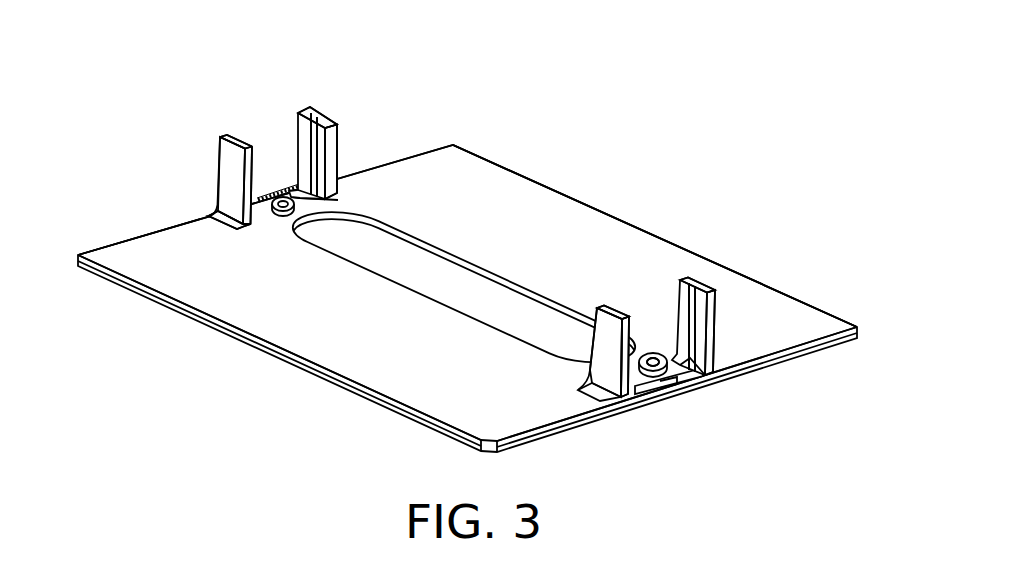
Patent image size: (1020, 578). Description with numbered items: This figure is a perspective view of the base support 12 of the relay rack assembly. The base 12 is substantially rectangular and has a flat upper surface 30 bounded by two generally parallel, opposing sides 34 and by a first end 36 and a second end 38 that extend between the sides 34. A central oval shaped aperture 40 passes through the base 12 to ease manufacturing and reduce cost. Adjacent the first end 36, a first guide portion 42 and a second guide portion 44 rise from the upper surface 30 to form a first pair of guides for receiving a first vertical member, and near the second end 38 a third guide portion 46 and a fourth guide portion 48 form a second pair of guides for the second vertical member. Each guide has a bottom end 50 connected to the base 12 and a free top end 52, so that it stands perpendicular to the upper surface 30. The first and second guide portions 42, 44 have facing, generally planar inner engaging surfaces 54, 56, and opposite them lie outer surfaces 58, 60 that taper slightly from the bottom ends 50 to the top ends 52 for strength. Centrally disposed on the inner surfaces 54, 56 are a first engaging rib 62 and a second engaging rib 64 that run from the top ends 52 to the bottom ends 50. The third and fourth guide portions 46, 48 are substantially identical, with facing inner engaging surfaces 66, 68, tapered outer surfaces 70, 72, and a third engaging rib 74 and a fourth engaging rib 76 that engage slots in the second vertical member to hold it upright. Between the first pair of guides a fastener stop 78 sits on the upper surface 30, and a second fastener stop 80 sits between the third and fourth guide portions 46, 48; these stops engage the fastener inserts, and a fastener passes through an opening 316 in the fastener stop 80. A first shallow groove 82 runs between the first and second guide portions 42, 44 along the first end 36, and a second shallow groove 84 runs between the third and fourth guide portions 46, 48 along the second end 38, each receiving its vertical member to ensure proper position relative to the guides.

The base support 12 is at (620, 151).
The upper surface 30 is at (460, 145).
The sides 34 is at (527, 173).
The first end 36 is at (103, 243).
The second end 38 is at (521, 441).
The central oval shaped aperture 40 is at (453, 257).
The first guide portion 42 is at (212, 147).
The second guide portion 44 is at (343, 128).
The third guide portion 46 is at (628, 307).
The fourth guide portion 48 is at (720, 301).
The bottom end 50 is at (216, 200).
The top end 52 is at (218, 133).
The inner engaging surface 54 is at (225, 136).
The inner engaging surface 56 is at (308, 107).
The outer surface 58 is at (224, 176).
The outer surface 60 is at (345, 156).
The first engaging rib 62 is at (249, 140).
The second engaging rib 64 is at (298, 112).
The inner engaging surface 66 is at (632, 310).
The inner engaging surface 68 is at (681, 292).
The outer surface 70 is at (607, 345).
The outer surface 72 is at (723, 328).
The third engaging rib 74 is at (598, 305).
The fourth engaging rib 76 is at (694, 328).
The fastener stop 78 is at (274, 213).
The fastener stop 80 is at (651, 374).
The first shallow groove 82 is at (278, 193).
The second shallow groove 84 is at (698, 380).
The opening in fastener stop 316 is at (657, 356).